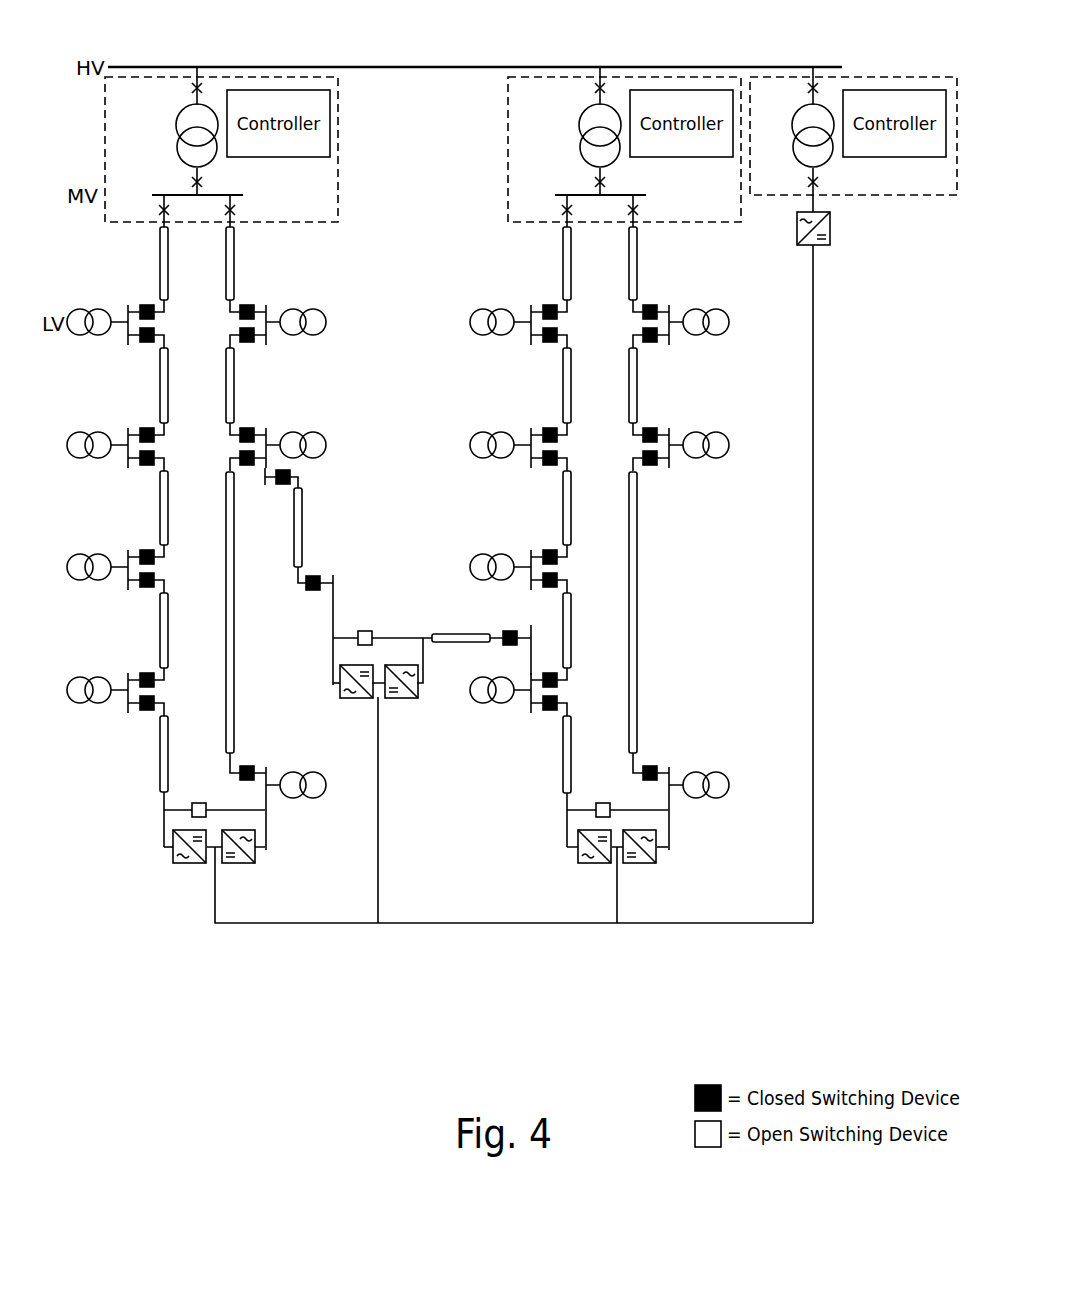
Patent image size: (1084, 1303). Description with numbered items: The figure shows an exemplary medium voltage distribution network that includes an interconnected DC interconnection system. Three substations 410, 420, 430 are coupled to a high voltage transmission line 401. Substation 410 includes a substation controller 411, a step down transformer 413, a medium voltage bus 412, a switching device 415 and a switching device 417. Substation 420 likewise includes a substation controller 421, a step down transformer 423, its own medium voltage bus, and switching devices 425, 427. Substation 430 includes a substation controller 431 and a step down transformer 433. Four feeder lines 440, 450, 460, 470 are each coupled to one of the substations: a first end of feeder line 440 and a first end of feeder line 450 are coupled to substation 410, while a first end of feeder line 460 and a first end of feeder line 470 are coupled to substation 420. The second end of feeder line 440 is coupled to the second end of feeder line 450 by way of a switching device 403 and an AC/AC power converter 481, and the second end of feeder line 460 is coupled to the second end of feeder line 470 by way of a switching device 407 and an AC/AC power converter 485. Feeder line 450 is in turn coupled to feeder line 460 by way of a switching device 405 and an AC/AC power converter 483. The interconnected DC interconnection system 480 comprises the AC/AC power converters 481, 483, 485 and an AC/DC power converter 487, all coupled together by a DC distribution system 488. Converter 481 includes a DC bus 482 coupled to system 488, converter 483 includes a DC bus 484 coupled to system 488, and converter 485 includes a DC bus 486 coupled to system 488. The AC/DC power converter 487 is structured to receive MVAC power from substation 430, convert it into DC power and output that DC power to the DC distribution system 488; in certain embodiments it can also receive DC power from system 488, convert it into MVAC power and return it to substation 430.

The high voltage transmission line 401 is at (478, 66).
The substation 410 is at (208, 77).
The substation controller 411 is at (283, 88).
The medium voltage bus 412 is at (158, 192).
The step down transformer 413 is at (178, 116).
The switching device 415 is at (158, 209).
The switching device 417 is at (236, 209).
The substation 420 is at (610, 77).
The substation controller 421 is at (686, 88).
The step down transformer 423 is at (582, 116).
The switching device 425 is at (561, 209).
The switching device 427 is at (640, 209).
The substation 430 is at (845, 77).
The substation controller 431 is at (908, 88).
The step down transformer 433 is at (796, 116).
The feeder line 440 is at (146, 266).
The feeder line 450 is at (247, 266).
The feeder line 460 is at (548, 266).
The feeder line 470 is at (650, 266).
The switching device 403 is at (164, 810).
The switching device 405 is at (332, 638).
The switching device 407 is at (567, 810).
The interconnected DC interconnection system 480 is at (396, 950).
The AC/AC power converter 481 is at (189, 866).
The DC bus 482 is at (216, 850).
The AC/AC power converter 483 is at (402, 699).
The DC bus 484 is at (371, 698).
The AC/AC power converter 485 is at (641, 866).
The DC bus 486 is at (613, 862).
The AC/DC power converter 487 is at (831, 228).
The DC distribution system 488 is at (815, 334).